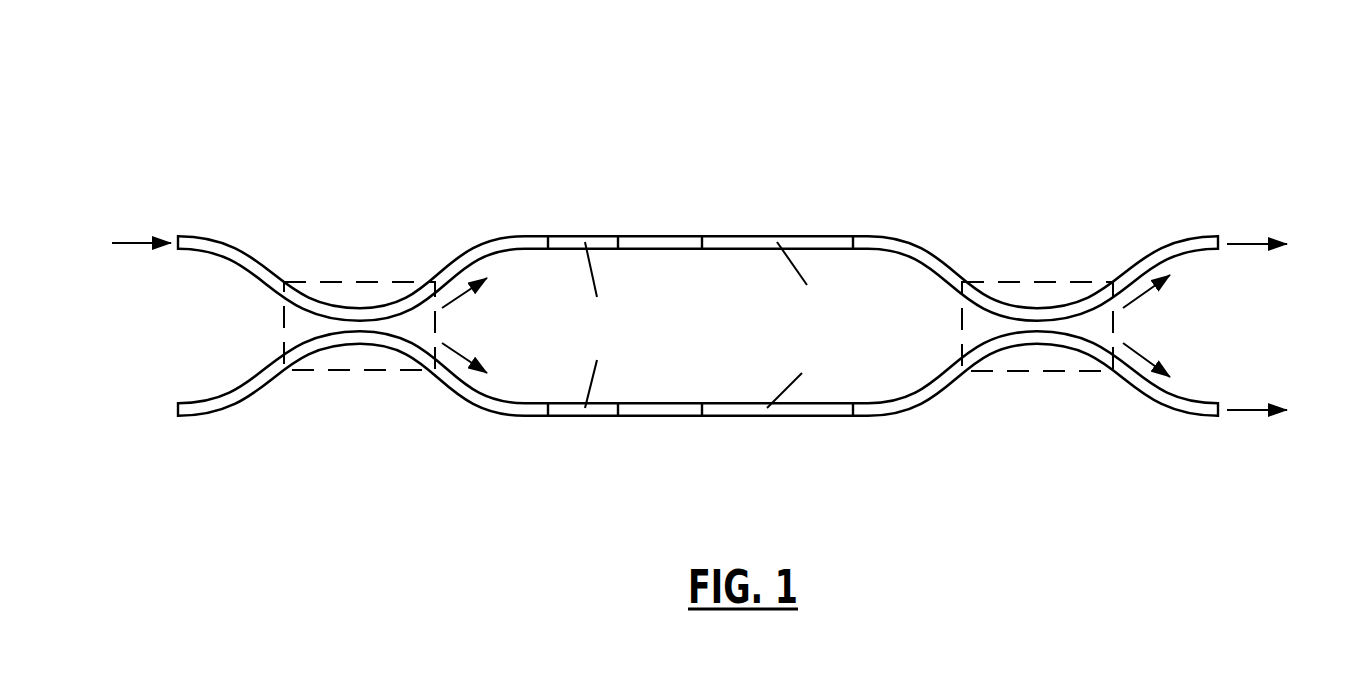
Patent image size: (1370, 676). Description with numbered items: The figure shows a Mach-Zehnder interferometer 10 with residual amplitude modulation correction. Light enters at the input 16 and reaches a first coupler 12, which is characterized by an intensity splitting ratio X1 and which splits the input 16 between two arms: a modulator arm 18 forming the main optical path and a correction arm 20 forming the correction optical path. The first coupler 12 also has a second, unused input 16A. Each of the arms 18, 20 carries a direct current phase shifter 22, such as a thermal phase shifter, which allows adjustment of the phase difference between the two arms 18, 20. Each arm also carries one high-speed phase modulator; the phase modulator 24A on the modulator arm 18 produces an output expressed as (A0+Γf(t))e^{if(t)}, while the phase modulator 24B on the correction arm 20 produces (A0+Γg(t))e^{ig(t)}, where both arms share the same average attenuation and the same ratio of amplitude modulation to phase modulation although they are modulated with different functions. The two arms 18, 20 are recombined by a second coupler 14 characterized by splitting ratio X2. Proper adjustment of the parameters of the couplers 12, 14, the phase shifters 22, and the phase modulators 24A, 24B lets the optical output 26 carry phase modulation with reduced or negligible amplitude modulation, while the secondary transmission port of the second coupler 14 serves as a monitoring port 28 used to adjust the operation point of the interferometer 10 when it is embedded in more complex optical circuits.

The Mach-Zehnder interferometer 10 is at (680, 100).
The first coupler 12 is at (367, 371).
The second coupler 14 is at (1042, 372).
The input 16 is at (155, 190).
The unused input 16A is at (160, 440).
The modulator arm 18 is at (505, 236).
The correction arm 20 is at (511, 416).
The DC phase-shifter 22 is at (595, 236).
The high-speed phase modulator 24A is at (838, 236).
The high-speed phase modulator 24B is at (722, 416).
The optical output 26 is at (1268, 193).
The monitoring port 28 is at (1270, 355).